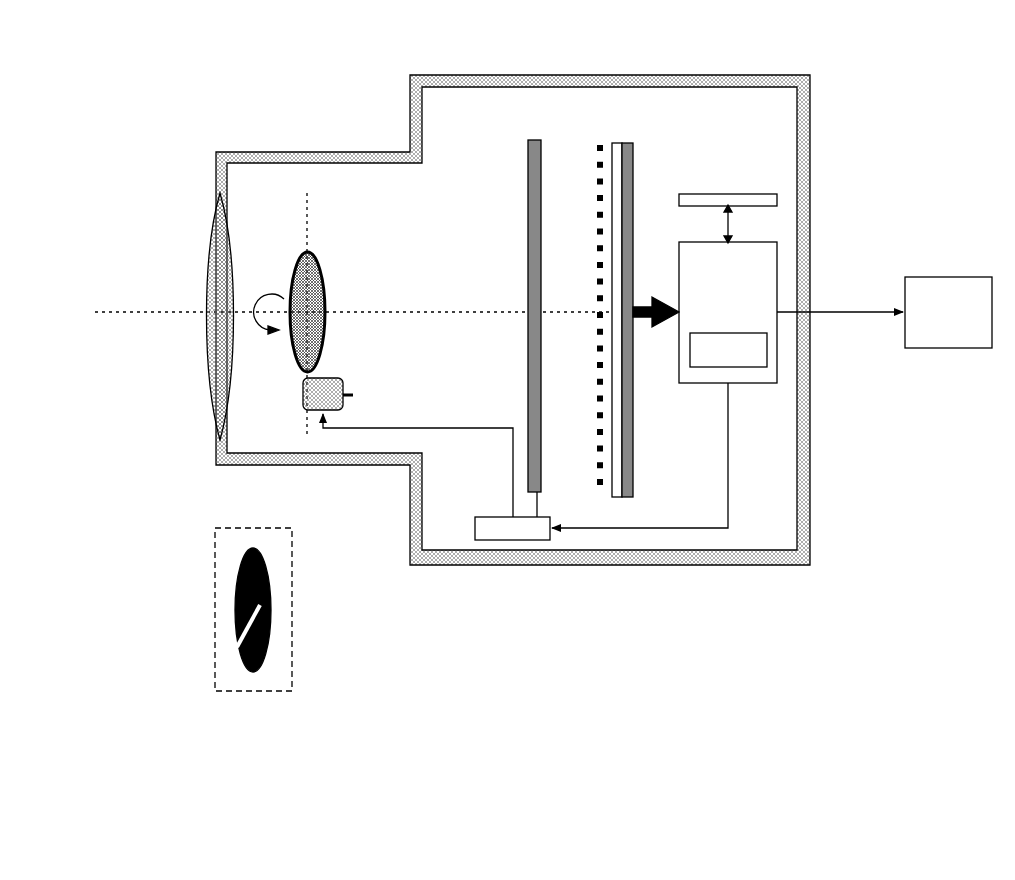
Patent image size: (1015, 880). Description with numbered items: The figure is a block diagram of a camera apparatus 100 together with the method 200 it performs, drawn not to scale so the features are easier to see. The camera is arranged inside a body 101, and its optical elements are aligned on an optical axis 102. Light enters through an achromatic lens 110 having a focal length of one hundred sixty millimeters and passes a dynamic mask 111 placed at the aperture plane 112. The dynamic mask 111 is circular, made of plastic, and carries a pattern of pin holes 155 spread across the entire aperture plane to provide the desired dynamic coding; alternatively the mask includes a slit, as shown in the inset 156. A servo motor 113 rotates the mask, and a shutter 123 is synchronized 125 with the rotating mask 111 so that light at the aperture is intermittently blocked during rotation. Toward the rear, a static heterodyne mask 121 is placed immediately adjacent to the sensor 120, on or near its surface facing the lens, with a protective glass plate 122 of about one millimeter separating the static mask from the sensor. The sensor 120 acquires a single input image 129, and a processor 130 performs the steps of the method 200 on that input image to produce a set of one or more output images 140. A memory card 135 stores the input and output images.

The apparatus 100 is at (546, 423).
The body 101 is at (378, 150).
The optical axis 102 is at (158, 312).
The lens 110 is at (205, 225).
The dynamic mask 111 is at (289, 350).
The aperture plane 112 is at (312, 205).
The servo motor 113 is at (353, 395).
The sensor 120 is at (628, 142).
The static heterodyne mask 121 is at (600, 142).
The protective glass plate 122 is at (623, 142).
The shutter 123 is at (527, 138).
The synchronization 125 is at (513, 543).
The input image 129 is at (670, 320).
The processor 130 is at (778, 330).
The memory card 135 is at (777, 200).
The output images 140 is at (945, 277).
The pin holes 155 is at (326, 292).
The inset 156 is at (237, 638).
The method 200 is at (728, 350).